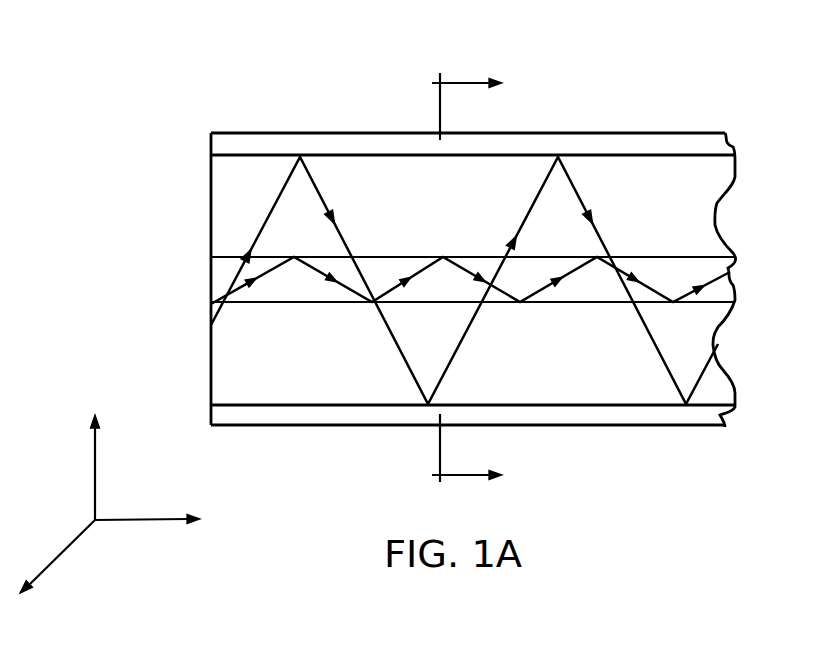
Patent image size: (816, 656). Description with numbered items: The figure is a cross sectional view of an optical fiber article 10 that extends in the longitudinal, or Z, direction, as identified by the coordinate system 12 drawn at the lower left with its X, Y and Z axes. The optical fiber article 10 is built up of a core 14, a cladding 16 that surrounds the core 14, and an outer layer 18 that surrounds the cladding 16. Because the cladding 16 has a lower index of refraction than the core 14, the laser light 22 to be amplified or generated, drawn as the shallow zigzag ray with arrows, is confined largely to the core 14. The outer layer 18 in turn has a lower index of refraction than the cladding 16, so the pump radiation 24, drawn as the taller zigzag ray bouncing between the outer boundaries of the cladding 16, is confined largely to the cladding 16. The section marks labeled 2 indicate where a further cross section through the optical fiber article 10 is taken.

The optical fiber article 10 is at (693, 96).
The coordinate system 12 is at (110, 546).
The core 14 is at (400, 257).
The cladding 16 is at (248, 381).
The outer layer 18 is at (250, 142).
The laser light 22 is at (243, 283).
The pump radiation 24 is at (325, 202).
The section line 2- 2 is at (456, 283).